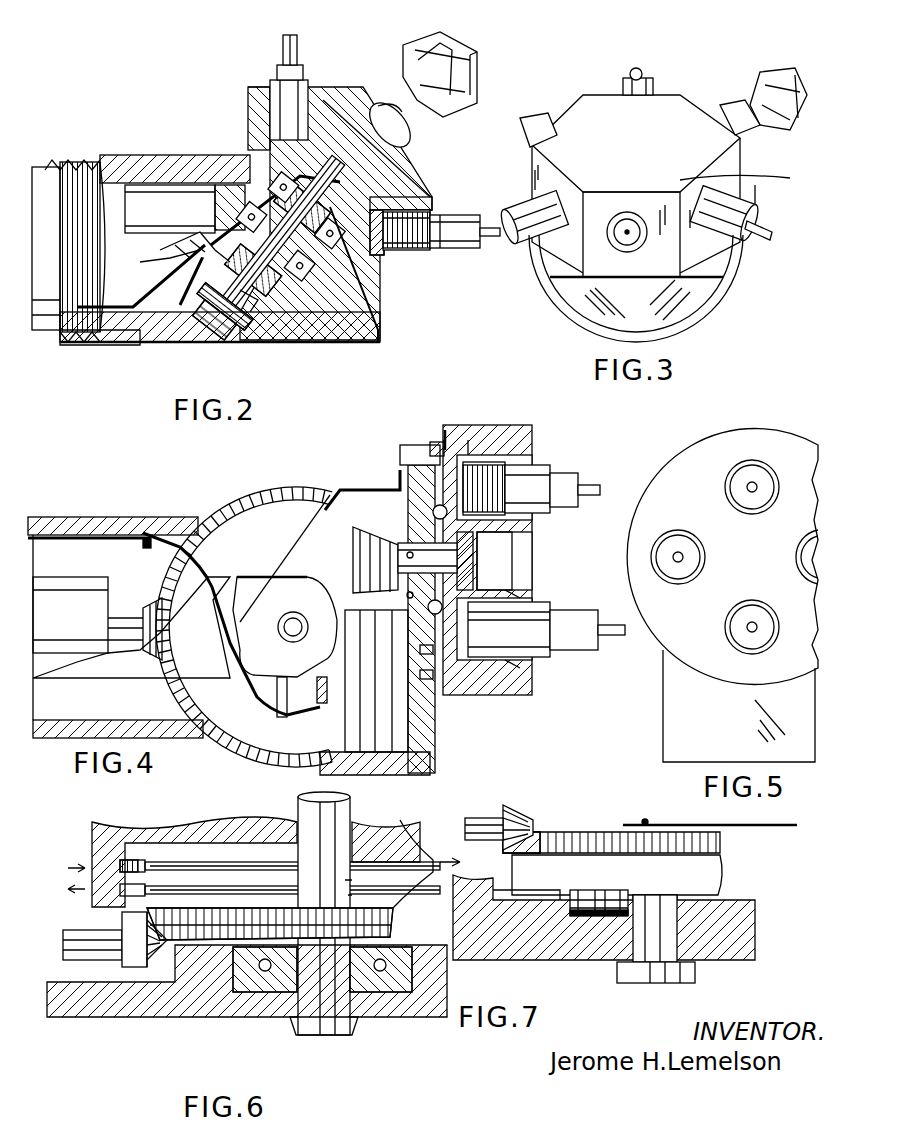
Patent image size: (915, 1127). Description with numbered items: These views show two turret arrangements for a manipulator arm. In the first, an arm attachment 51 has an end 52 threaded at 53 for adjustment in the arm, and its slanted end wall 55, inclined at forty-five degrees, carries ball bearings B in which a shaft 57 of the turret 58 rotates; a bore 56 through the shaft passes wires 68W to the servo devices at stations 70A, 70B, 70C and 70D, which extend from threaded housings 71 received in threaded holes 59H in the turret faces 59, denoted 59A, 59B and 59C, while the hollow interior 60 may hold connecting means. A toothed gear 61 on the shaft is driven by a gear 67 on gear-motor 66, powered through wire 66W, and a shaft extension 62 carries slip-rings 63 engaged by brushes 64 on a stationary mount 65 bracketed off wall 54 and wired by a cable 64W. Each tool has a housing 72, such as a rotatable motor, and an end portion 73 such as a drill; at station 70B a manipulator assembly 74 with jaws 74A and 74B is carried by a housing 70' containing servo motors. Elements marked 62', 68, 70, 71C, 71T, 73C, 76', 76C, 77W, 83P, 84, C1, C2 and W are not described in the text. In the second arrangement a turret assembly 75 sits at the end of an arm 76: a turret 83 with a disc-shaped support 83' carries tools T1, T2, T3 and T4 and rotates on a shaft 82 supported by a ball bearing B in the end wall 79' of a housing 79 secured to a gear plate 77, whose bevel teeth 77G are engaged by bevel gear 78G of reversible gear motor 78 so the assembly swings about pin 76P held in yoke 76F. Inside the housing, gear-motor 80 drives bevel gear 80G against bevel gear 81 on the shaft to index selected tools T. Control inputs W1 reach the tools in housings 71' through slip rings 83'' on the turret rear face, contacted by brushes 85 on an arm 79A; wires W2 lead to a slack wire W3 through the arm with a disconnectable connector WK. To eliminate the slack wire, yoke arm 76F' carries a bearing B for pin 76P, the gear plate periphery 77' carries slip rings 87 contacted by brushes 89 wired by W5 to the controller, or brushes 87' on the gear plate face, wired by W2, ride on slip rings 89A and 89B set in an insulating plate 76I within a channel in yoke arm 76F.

In FIG. 2, the arm attachment 51 is at (142, 158).
In FIG. 2, the other end of arm attachment 52 is at (48, 332).
In FIG. 2, the threads 53 is at (70, 165).
In FIG. 2, the wall of arm 54 is at (380, 340).
In FIG. 2, the slanted end wall 55 is at (372, 318).
In FIG. 3, the slanted end wall 55 is at (710, 318).
In FIG. 2, the bore in shaft 56 is at (355, 342).
In FIG. 2, the shaft 57 is at (262, 185).
In FIG. 2, the turret 58 is at (410, 189).
In FIG. 2, the turret faces 59 is at (322, 100).
In FIG. 2, the turret face 59A is at (255, 88).
In FIG. 3, the turret face 59B is at (680, 125).
In FIG. 3, the turret face 59C is at (645, 195).
In FIG. 2, the threaded holes 59H is at (268, 86).
In FIG. 2, the hollow interior of turret 60 is at (380, 172).
In FIG. 2, the toothed gear 61 is at (300, 270).
In FIG. 2, the shaft extension 62 is at (278, 285).
In FIG. 2, the bearing 62' is at (277, 348).
In FIG. 2, the slip-rings 63 is at (235, 300).
In FIG. 2, the brushes 64 is at (205, 247).
In FIG. 2, the cable 64W is at (152, 293).
In FIG. 2, the stationary mount 65 is at (178, 305).
In FIG. 2, the gear-motor 66 is at (178, 200).
In FIG. 2, the wire 66W is at (160, 256).
In FIG. 2, the gear 67 is at (232, 190).
In FIG. 2, the bolt 68 is at (335, 180).
In FIG. 2, the wires 68W is at (328, 172).
In FIG. 2, the tool holder 70 is at (414, 270).
In FIG. 2, the housing 70' is at (502, 22).
In FIG. 3, the housing 70' is at (792, 140).
In FIG. 2, the servo operated device 70A is at (302, 80).
In FIG. 3, the servo operated device 70A is at (643, 82).
In FIG. 2, the turret station 70B is at (405, 128).
In FIG. 3, the servo operated device 70C is at (750, 203).
In FIG. 3, the servo operated device 70D is at (605, 240).
In FIG. 2, the housings 71 is at (394, 261).
In FIG. 4, the housings 71' is at (567, 455).
In FIG. 3, the tool 71C is at (780, 194).
In FIG. 2, the tool thread 71T is at (432, 207).
In FIG. 2, the tool housing 72 is at (465, 250).
In FIG. 2, the end portion 73 is at (488, 238).
In FIG. 3, the tool tip 73C is at (770, 236).
In FIG. 2, the article manipulator assembly 74 is at (463, 108).
In FIG. 3, the article manipulator assembly 74 is at (770, 70).
In FIG. 2, the jaw member 74A is at (425, 60).
In FIG. 2, the jaw member 74B is at (478, 80).
In FIG. 4, the turret assembly 75 is at (538, 416).
In FIG. 4, the arm 76 is at (115, 609).
In FIG. 4, the frame clamp 76' is at (143, 512).
In FIG. 7, the cavity 76C is at (572, 902).
In FIG. 4, the yoke 76F is at (131, 627).
In FIG. 7, the yoke 76F is at (604, 941).
In FIG. 6, the yoke arm 76F' is at (247, 1010).
In FIG. 7, the insulating washer or plate 76I is at (560, 920).
In FIG. 4, the shaft or pin 76P is at (288, 620).
In FIG. 6, the shaft or pin 76P is at (300, 808).
In FIG. 7, the shaft or pin 76P is at (696, 976).
In FIG. 4, the gear plate 77 is at (256, 490).
In FIG. 7, the gear plate 77 is at (644, 877).
In FIG. 4, the peripheral surface 77' is at (201, 770).
In FIG. 6, the peripheral surface 77' is at (367, 887).
In FIG. 4, the gear teeth 77G is at (228, 492).
In FIG. 6, the gear teeth 77G is at (385, 938).
In FIG. 7, the gear teeth 77G is at (552, 832).
In FIG. 6, the gear wall 77W is at (400, 900).
In FIG. 4, the reversible gear motor 78 is at (82, 603).
In FIG. 6, the reversible gear motor 78 is at (70, 932).
In FIG. 7, the reversible gear motor 78 is at (470, 829).
In FIG. 4, the bevel gear 78G is at (150, 605).
In FIG. 6, the bevel gear 78G is at (131, 965).
In FIG. 7, the bevel gear 78G is at (516, 805).
In FIG. 4, the housing 79 is at (373, 741).
In FIG. 5, the housing 79 is at (714, 706).
In FIG. 6, the housing 79 is at (256, 847).
In FIG. 4, the end wall 79' is at (446, 627).
In FIG. 4, the projection or arm 79A is at (400, 455).
In FIG. 4, the reversible gear-motor 80 is at (385, 745).
In FIG. 4, the bevel gear 80G is at (328, 582).
In FIG. 4, the bevel gear 81 is at (330, 485).
In FIG. 4, the shaft 82 is at (500, 548).
In FIG. 4, the turret 83 is at (510, 540).
In FIG. 5, the turret 83 is at (722, 546).
In FIG. 4, the disc-shaped support 83' is at (554, 430).
In FIG. 5, the disc-shaped support 83' is at (771, 412).
In FIG. 4, the slip rings 83'' is at (455, 415).
In FIG. 4, the turret pin 83P is at (528, 665).
In FIG. 4, the stop 84 is at (482, 440).
In FIG. 4, the brushes 85 is at (430, 448).
In FIG. 6, the slip rings 87 is at (280, 842).
In FIG. 7, the electrical wipers or brushes 87' is at (648, 880).
In FIG. 6, the brushes 89 is at (125, 860).
In FIG. 7, the slip ring 89A is at (600, 915).
In FIG. 7, the slip ring 89B is at (622, 916).
In FIG. 2, the ball bearings B is at (345, 99).
In FIG. 4, the ball bearings B is at (408, 597).
In FIG. 6, the ball bearings B is at (400, 992).
In FIG. 4, the clamp C1 is at (440, 710).
In FIG. 4, the clamp C2 is at (430, 670).
In FIG. 4, the tools or devices T is at (576, 520).
In FIG. 4, the tool T1 is at (580, 473).
In FIG. 5, the tool T1 is at (735, 483).
In FIG. 5, the tool T2 is at (806, 550).
In FIG. 4, the tool T3 is at (575, 612).
In FIG. 5, the tool T3 is at (745, 640).
In FIG. 5, the tool T4 is at (677, 532).
In FIG. 4, the wire W is at (500, 660).
In FIG. 4, the control inputs W1 is at (108, 538).
In FIG. 4, the wires W2 is at (398, 484).
In FIG. 7, the wires W2 is at (777, 830).
In FIG. 4, the slacked wire W3 is at (218, 595).
In FIG. 6, the wires W5 is at (72, 865).
In FIG. 4, the disconnectable electrical connector WK is at (282, 715).